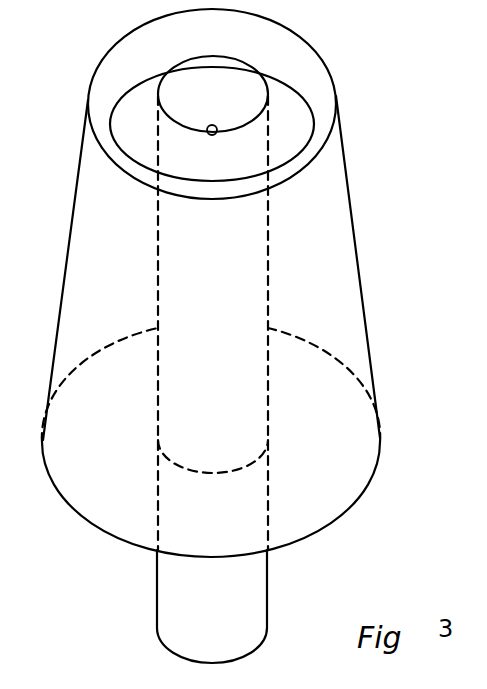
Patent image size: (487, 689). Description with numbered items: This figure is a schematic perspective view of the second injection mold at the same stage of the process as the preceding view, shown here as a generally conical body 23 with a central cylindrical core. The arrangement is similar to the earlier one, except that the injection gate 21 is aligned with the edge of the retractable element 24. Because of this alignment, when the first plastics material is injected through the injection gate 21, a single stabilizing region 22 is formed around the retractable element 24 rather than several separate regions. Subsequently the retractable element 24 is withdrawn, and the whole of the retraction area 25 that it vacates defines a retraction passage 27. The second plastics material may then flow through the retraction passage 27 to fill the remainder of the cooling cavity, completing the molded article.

The injection gate 21 is at (209, 136).
The stabilizing region 22 is at (212, 124).
The conical body 23 is at (365, 281).
The retractable element 24 is at (213, 94).
The retraction area 25 is at (213, 323).
The retraction passage 27 is at (212, 606).